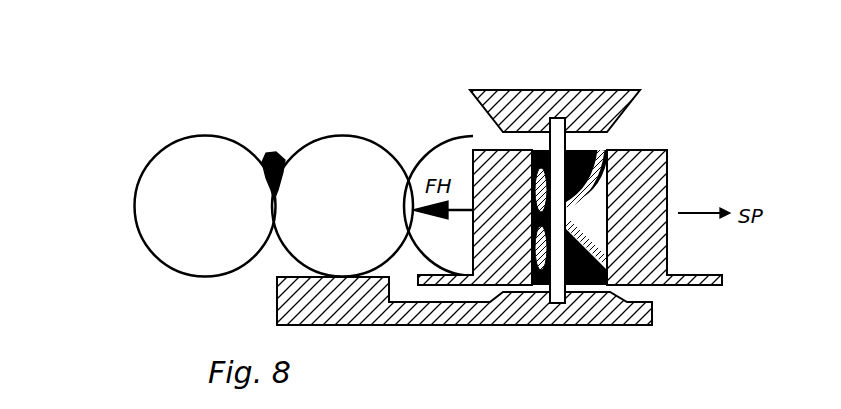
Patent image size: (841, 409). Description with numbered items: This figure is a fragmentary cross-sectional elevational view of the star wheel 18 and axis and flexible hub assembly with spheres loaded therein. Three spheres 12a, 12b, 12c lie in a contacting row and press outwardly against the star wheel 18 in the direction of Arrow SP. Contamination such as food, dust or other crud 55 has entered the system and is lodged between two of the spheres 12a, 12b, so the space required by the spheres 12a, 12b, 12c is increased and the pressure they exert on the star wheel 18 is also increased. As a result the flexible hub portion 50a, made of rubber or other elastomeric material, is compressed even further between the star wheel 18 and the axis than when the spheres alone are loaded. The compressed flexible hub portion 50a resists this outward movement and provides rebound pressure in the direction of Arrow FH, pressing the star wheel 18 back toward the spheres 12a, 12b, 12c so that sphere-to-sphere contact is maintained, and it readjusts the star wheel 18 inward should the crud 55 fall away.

The sphere 12a is at (142, 170).
The sphere 12b is at (282, 262).
The sphere 12c is at (422, 167).
The crud 55 is at (268, 153).
The flexible hub portion 50a is at (541, 150).
The star wheel 18 is at (668, 168).